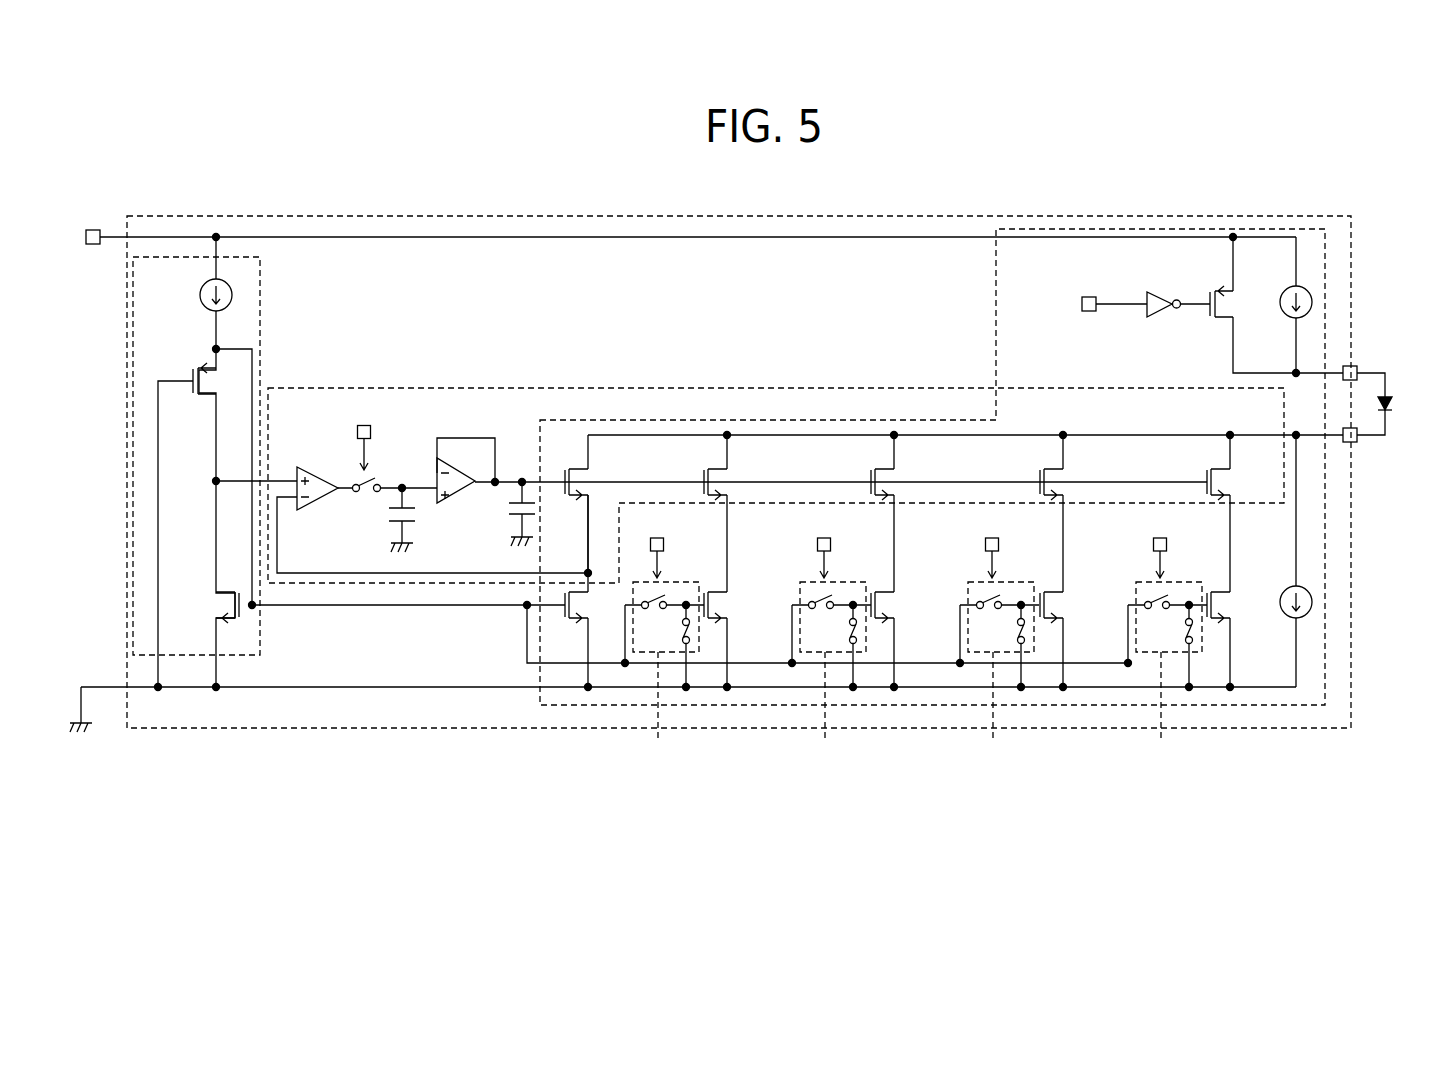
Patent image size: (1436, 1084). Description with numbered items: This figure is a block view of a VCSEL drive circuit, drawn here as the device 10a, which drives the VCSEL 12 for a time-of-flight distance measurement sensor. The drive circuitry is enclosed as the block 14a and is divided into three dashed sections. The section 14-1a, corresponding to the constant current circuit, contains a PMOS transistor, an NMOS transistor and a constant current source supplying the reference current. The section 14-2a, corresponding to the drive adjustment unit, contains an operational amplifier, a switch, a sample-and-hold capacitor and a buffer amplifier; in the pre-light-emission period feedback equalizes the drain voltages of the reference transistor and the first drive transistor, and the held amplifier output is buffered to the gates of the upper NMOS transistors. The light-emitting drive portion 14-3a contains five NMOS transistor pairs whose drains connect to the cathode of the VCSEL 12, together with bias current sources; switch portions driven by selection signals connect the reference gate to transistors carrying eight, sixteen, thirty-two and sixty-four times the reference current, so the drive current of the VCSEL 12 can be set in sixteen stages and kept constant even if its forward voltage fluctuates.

The semiconductor device (driver) 10a is at (1379, 218).
The VCSEL 12 is at (1392, 390).
The bias current supply circuit 14a is at (1351, 693).
The reference current source section 14-1a is at (262, 637).
The voltage holding / buffer section 14-2a is at (550, 388).
The light-emitting drive portion 14-3a is at (996, 353).